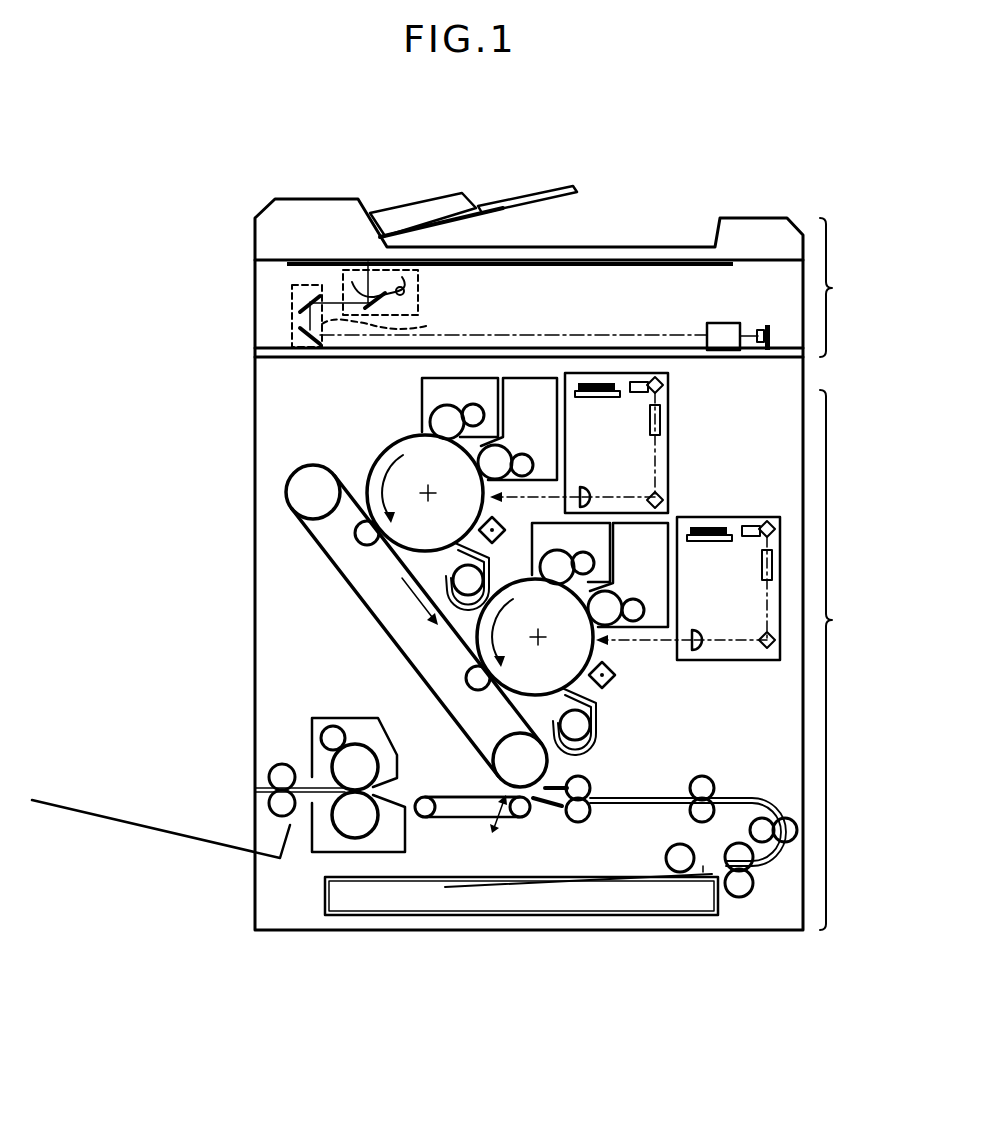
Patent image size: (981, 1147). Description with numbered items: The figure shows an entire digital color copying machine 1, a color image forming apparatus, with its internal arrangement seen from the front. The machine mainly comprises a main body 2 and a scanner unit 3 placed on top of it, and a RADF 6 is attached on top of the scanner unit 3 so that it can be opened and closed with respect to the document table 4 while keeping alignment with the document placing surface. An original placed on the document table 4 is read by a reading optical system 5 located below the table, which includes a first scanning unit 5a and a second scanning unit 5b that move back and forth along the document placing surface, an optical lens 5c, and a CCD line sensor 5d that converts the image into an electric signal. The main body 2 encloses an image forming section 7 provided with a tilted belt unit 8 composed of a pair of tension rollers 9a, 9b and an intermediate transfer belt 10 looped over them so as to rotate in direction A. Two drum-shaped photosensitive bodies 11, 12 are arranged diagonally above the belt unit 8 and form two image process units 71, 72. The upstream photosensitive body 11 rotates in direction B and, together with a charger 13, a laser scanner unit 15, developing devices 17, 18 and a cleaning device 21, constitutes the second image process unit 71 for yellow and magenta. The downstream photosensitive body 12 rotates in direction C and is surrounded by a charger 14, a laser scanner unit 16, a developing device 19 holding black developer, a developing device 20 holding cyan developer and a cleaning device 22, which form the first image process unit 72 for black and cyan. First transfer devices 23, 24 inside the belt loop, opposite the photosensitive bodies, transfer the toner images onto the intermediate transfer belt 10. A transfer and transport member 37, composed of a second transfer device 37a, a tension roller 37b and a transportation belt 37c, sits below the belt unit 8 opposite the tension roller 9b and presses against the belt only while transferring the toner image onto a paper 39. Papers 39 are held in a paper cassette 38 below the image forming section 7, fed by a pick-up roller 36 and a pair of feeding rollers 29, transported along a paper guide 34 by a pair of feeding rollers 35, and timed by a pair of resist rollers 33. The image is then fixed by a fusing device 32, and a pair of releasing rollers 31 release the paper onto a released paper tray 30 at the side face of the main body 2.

The digital color copying machine 1 is at (862, 191).
The main body 2 is at (836, 660).
The scanner unit 3 is at (836, 287).
The document table 4 is at (686, 262).
The reading optical system 5 is at (265, 310).
The first scanning unit 5a is at (420, 293).
The second scanning unit 5b is at (421, 325).
The optical lens 5c is at (722, 323).
The CCD line sensor 5d is at (768, 330).
The RADF (Reversing Automatic Document Feeder) 6 is at (326, 195).
The image forming section 7 is at (272, 489).
The belt unit 8 is at (362, 637).
The tension roller 9a is at (313, 470).
The tension roller 9b is at (497, 775).
The intermediate transfer belt 10 is at (337, 572).
The photosensitive body 11 is at (373, 470).
The photosensitive body 12 is at (527, 690).
The charger 13 is at (499, 523).
The charger 14 is at (626, 656).
The laser scanner unit (LSU) 15 is at (668, 464).
The laser scanner unit (LSU) 16 is at (730, 662).
The developing device 17 is at (533, 376).
The developing device 18 is at (422, 395).
The developing device 19 is at (656, 630).
The developing device 20 is at (532, 536).
The cleaning device 21 is at (466, 596).
The cleaning device 22 is at (598, 736).
The first transfer device 23 is at (370, 546).
The first transfer device 24 is at (477, 690).
The feeding rollers 29 is at (753, 883).
The released paper tray 30 is at (165, 829).
The releasing rollers 31 is at (282, 764).
The fusing device 32 is at (349, 717).
The resist rollers 33 is at (592, 784).
The paper guide 34 is at (775, 845).
The feeding rollers 35 is at (714, 785).
The pick-up roller 36 is at (665, 855).
The transfer and transport member 37 is at (467, 828).
The second transfer device 37a is at (521, 818).
The tension roller 37b is at (427, 818).
The transportation belt 37c is at (438, 792).
The paper cassette 38 is at (687, 918).
The paper 39 is at (703, 868).
The second image process unit 71 is at (713, 412).
The first image process unit 72 is at (752, 492).